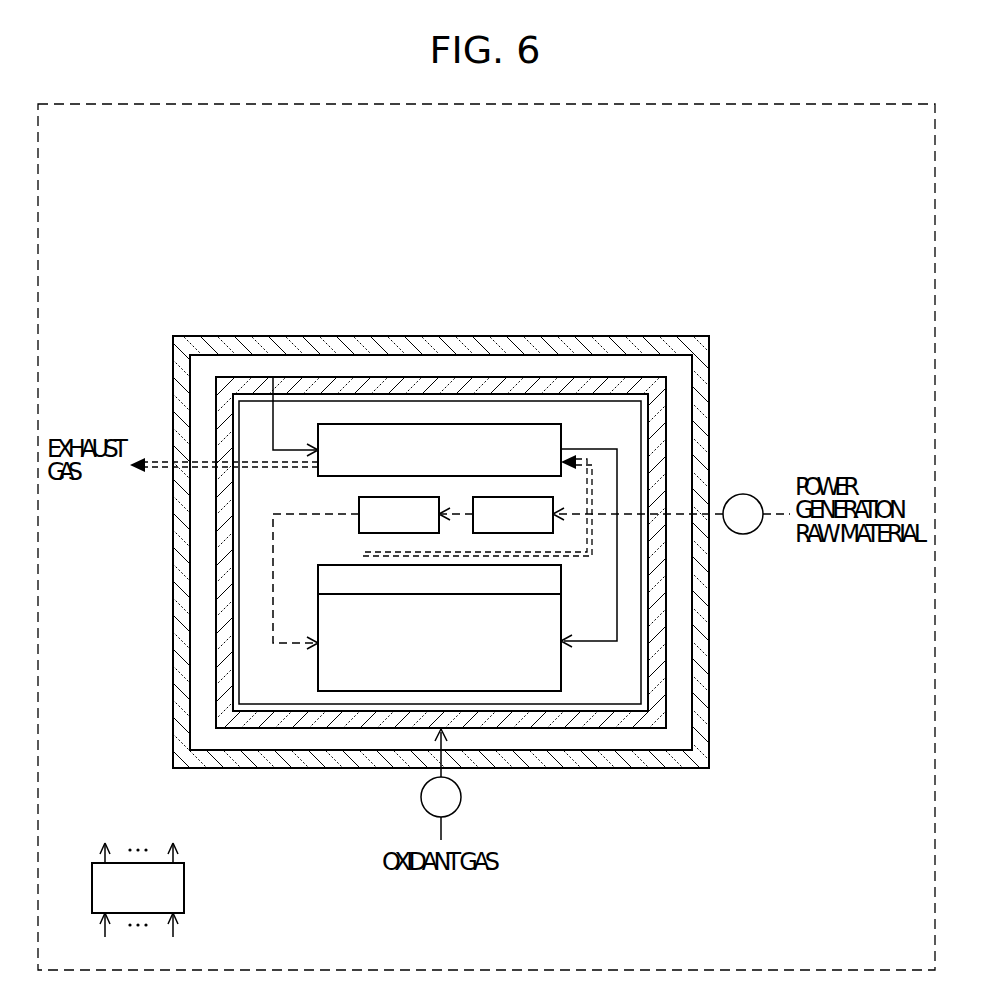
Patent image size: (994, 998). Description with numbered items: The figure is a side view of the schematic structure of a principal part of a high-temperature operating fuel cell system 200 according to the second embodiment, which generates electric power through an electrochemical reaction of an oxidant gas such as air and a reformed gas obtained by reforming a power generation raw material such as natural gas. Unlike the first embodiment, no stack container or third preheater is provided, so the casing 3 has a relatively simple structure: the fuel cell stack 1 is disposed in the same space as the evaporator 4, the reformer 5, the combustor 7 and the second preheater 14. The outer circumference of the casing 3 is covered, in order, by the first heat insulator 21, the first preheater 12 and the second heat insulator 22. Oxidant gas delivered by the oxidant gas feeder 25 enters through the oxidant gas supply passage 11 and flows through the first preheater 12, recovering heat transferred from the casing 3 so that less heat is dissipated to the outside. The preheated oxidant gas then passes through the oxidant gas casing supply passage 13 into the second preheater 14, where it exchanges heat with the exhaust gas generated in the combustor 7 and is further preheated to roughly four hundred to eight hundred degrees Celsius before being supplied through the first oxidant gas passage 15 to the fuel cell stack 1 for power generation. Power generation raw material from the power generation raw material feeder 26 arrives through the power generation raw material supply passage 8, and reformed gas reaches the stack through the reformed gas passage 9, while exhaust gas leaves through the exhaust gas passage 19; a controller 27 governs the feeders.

The high-temperature operating fuel cell system 200 is at (195, 220).
The fuel cell stack 1 is at (432, 661).
The casing 3 is at (505, 383).
The evaporator 4 is at (506, 529).
The reformer 5 is at (392, 529).
The combustor 7 is at (432, 593).
The power generation raw material supply passage 8 is at (715, 512).
The reformed gas passage 9 is at (273, 574).
The oxidant gas supply passage 11 is at (442, 828).
The first preheater 12 is at (678, 642).
The oxidant gas casing supply passage 13 is at (272, 417).
The second preheater 14 is at (427, 464).
The first oxidant gas passage 15 is at (620, 476).
The exhaust gas passage 19 is at (168, 470).
The first heat insulator 21 is at (655, 585).
The second heat insulator 22 is at (703, 692).
The oxidant gas feeder 25 is at (429, 807).
The power generation raw material feeder 26 is at (731, 524).
The controller 27 is at (126, 900).